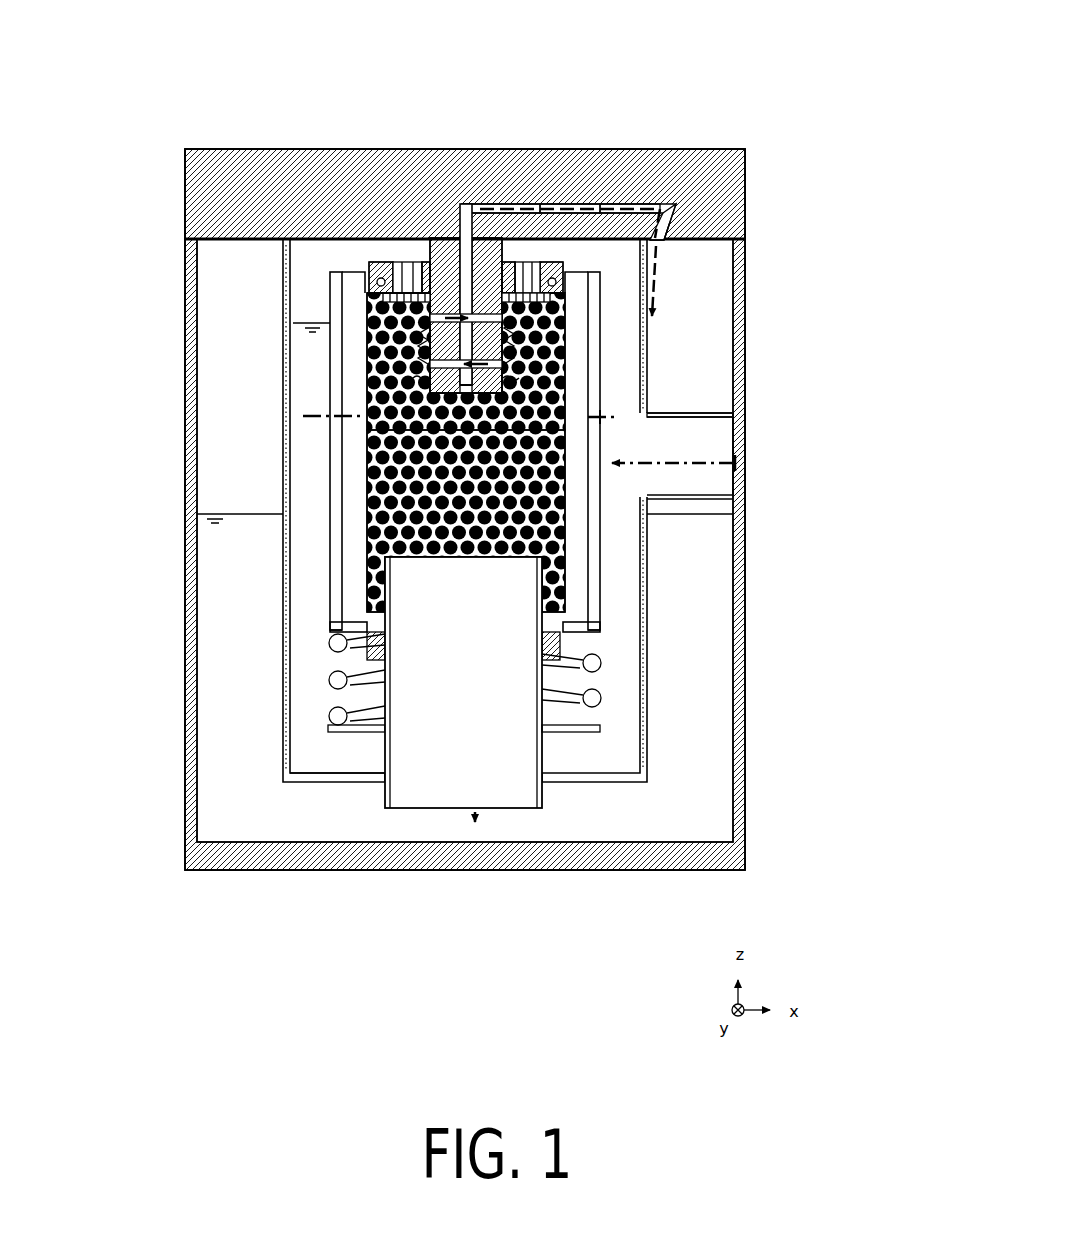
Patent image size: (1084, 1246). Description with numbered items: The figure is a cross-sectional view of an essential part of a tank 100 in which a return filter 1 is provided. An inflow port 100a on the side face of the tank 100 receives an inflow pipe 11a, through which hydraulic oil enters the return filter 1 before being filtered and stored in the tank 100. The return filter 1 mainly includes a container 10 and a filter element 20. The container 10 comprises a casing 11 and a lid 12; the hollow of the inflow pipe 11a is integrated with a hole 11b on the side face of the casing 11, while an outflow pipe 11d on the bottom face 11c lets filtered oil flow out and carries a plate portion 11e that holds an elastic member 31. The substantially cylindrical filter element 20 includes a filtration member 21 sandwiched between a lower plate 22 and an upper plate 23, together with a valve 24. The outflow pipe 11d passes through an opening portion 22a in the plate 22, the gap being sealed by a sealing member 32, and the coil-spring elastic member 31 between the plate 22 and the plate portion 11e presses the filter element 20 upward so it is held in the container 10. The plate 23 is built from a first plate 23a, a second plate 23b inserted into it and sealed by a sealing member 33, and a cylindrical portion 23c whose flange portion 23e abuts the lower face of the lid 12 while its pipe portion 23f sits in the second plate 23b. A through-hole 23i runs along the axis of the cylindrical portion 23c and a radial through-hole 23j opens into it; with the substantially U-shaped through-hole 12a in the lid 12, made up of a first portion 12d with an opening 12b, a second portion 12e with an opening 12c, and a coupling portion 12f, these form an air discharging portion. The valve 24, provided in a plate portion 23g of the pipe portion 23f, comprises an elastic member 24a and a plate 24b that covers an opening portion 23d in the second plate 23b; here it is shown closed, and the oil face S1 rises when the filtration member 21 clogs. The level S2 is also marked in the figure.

The return filter 1 is at (783, 163).
The container 10 is at (178, 102).
The casing 11 is at (287, 253).
The inflow pipe 11a is at (722, 412).
The hole 11b is at (673, 456).
The bottom face 11c is at (310, 775).
The outflow pipe 11d is at (547, 793).
The plate portion 11e is at (360, 732).
The lid 12 is at (273, 182).
The through-hole 12a is at (565, 82).
The opening 12b is at (558, 203).
The opening 12c is at (680, 245).
The first portion 12d is at (466, 205).
The second portion 12e is at (660, 250).
The coupling portion 12f is at (580, 203).
The filter element 20 is at (840, 462).
The filtration member 21 is at (565, 537).
The plate 22 is at (590, 627).
The opening portion 22a is at (533, 657).
The plate 23 is at (272, 52).
The first plate 23a is at (330, 270).
The second plate 23b is at (372, 262).
The cylindrical portion 23c is at (518, 92).
The opening portion 23d is at (397, 262).
The flange portion 23e is at (442, 265).
The pipe portion 23f is at (458, 300).
The plate portion 23g is at (411, 262).
The through-hole 23i is at (466, 250).
The through-hole 23j is at (432, 292).
The valve 24 is at (797, 503).
The elastic member 24a is at (565, 412).
The plate 24b is at (565, 335).
The elastic member 31 is at (593, 703).
The sealing member 32 is at (373, 648).
The sealing member 33 is at (368, 293).
The tank 100 is at (192, 363).
The inflow port 100a is at (748, 426).
The oil face S1 is at (312, 323).
The second liquid level S2 is at (222, 513).